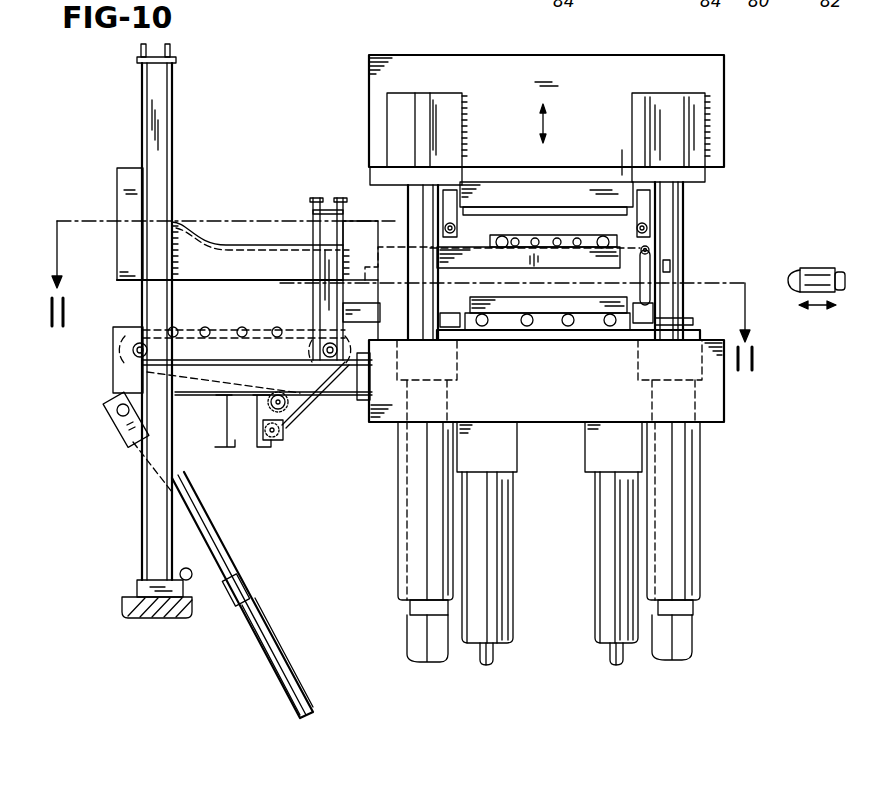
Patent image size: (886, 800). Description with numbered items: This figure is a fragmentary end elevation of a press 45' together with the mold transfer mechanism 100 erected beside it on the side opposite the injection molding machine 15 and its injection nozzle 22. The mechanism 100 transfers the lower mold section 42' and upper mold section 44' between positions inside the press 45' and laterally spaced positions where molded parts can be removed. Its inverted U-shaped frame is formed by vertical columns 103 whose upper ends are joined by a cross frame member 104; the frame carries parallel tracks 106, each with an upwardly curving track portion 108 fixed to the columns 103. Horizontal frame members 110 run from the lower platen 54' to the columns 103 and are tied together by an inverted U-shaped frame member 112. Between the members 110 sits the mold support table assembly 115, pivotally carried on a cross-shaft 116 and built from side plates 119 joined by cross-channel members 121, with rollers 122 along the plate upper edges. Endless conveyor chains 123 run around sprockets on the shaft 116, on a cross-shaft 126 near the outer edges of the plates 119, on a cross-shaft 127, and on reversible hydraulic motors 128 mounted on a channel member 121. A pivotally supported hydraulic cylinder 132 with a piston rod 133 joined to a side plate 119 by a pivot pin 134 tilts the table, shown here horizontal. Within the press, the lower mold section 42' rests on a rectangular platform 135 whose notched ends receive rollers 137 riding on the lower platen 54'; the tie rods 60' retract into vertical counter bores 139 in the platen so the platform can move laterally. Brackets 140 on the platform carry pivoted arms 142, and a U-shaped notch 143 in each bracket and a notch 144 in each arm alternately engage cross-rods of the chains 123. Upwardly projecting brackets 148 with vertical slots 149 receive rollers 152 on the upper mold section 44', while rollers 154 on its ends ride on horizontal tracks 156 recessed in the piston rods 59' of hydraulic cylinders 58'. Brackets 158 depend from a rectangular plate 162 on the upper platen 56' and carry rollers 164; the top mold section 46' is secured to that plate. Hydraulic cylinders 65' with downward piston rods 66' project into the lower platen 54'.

The rubber injection molding machine 15 is at (822, 262).
The injection nozzle 22 is at (790, 272).
The lower mold section 42' is at (548, 330).
The upper mold section 44' is at (546, 194).
The press 45' is at (375, 28).
The top mold section 46' is at (545, 198).
The lower platen 54' is at (570, 381).
The upper platen 56' is at (570, 111).
The hydraulic cylinder 58' is at (549, 511).
The piston rod 59' is at (559, 216).
The tie rod 60' is at (549, 631).
The hydraulic cylinder 65' is at (550, 557).
The piston rod 66' is at (551, 658).
The mold transfer mechanism 100 is at (294, 194).
The vertical column 103 is at (150, 90).
The cross frame member 104 is at (176, 56).
The track 106 is at (236, 282).
The upwardly curving track portion 108 is at (182, 236).
The horizontal frame member 110 is at (207, 378).
The inverted U-shaped frame member 112 is at (312, 212).
The mold support table assembly 115 is at (124, 320).
The cross-shaft 116 is at (320, 350).
The side plate 119 is at (118, 382).
The cross-channel member 121 is at (258, 450).
The roller 122 is at (240, 327).
The endless conveyor chain 123 is at (312, 396).
The cross-shaft 126 is at (132, 352).
The cross-shaft 127 is at (288, 412).
The reversible hydraulic motor 128 is at (281, 441).
The hydraulic cylinder 132 is at (252, 635).
The piston rod 133 is at (208, 528).
The pivot pin 134 is at (117, 412).
The rectangular platform 135 is at (549, 325).
The roller 137 is at (527, 328).
The vertical counter bore 139 is at (460, 378).
The bracket 140 is at (427, 381).
The arm 142 is at (368, 324).
The U-shaped notch 143 is at (452, 306).
The notch 144 is at (310, 320).
The bracket 148 is at (650, 315).
The vertical slot 149 is at (652, 270).
The roller 152 is at (650, 249).
The roller 154 is at (502, 236).
The horizontal track 156 is at (382, 282).
The bracket 158 is at (455, 195).
The rectangular plate 162 is at (622, 160).
The roller 164 is at (446, 226).